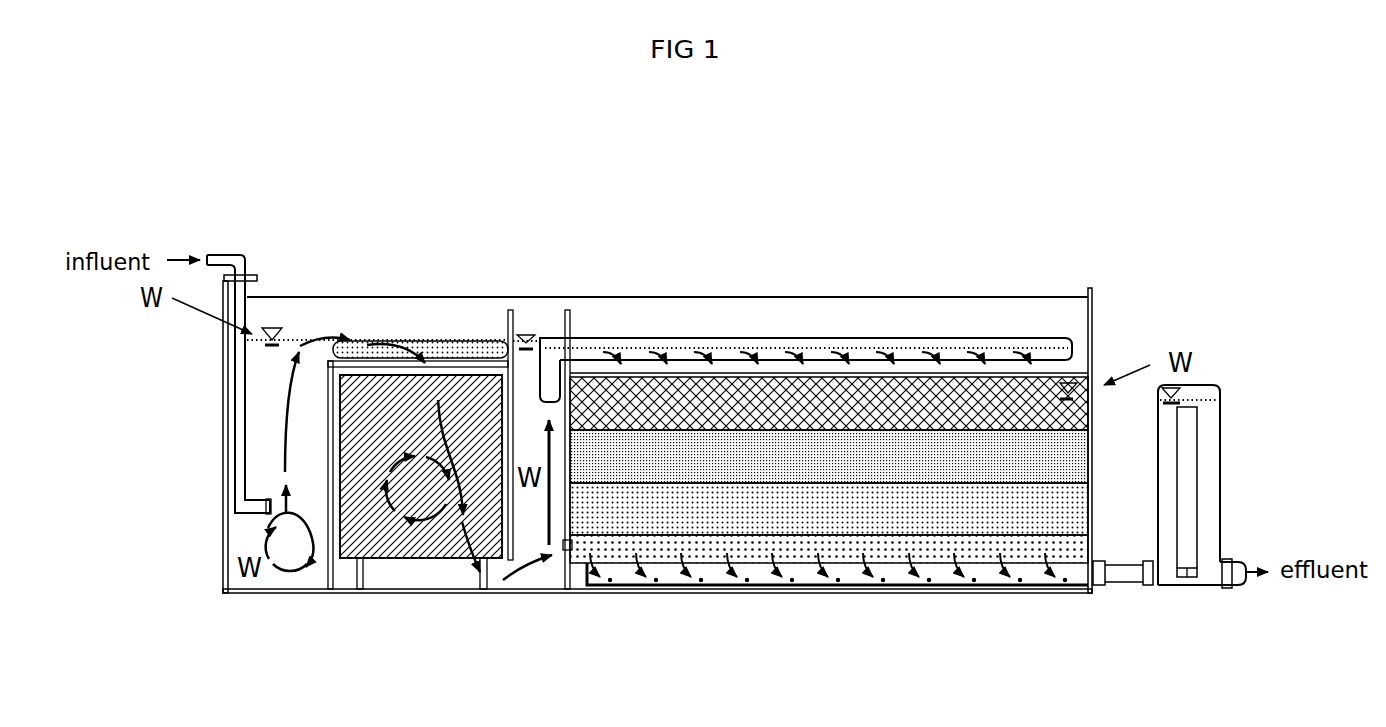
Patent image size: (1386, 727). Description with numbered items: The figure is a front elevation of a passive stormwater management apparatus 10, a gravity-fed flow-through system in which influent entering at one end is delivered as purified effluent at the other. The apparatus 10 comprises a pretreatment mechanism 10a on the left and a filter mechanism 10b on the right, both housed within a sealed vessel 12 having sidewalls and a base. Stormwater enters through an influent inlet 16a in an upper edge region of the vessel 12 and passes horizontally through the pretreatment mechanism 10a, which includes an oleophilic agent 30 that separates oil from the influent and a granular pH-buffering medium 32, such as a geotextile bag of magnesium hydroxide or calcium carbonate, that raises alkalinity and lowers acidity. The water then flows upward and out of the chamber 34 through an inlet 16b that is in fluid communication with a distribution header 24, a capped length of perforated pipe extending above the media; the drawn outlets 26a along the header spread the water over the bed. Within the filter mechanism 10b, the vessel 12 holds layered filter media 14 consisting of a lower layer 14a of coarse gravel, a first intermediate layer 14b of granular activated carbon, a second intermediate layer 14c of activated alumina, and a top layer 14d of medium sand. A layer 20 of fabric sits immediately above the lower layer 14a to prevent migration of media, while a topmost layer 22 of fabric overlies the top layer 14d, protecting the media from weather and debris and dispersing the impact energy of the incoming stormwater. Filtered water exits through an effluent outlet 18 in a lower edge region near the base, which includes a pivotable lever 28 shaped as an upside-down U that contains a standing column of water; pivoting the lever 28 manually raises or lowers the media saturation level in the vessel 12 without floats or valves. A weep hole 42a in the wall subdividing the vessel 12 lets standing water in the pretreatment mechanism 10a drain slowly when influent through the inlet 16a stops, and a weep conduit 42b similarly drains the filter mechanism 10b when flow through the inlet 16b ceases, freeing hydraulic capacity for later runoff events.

The stormwater management apparatus 10 is at (907, 285).
The pretreatment mechanism 10a is at (380, 317).
The filter mechanism 10b is at (793, 318).
The vessel 12 is at (1095, 317).
The layered filter media 14 is at (860, 518).
The lower layer 14a is at (1043, 547).
The first intermediate layer 14b is at (1053, 507).
The second intermediate layer 14c is at (1047, 460).
The top layer 14d is at (858, 403).
The influent inlet 16a is at (223, 255).
The inlet 16b is at (552, 368).
The effluent outlet 18 is at (1238, 562).
The layer of fabric 20 is at (620, 548).
The topmost layer of fabric 22 is at (1090, 393).
The distribution header 24 is at (805, 338).
The distribution outlets 26a is at (925, 352).
The pivotable lever 28 is at (1190, 387).
The oleophilic agent 30 is at (470, 397).
The granular pH-buffering medium 32 is at (448, 350).
The chamber 34 is at (407, 567).
The weep hole 42a is at (568, 545).
The weep conduit 42b is at (1187, 577).